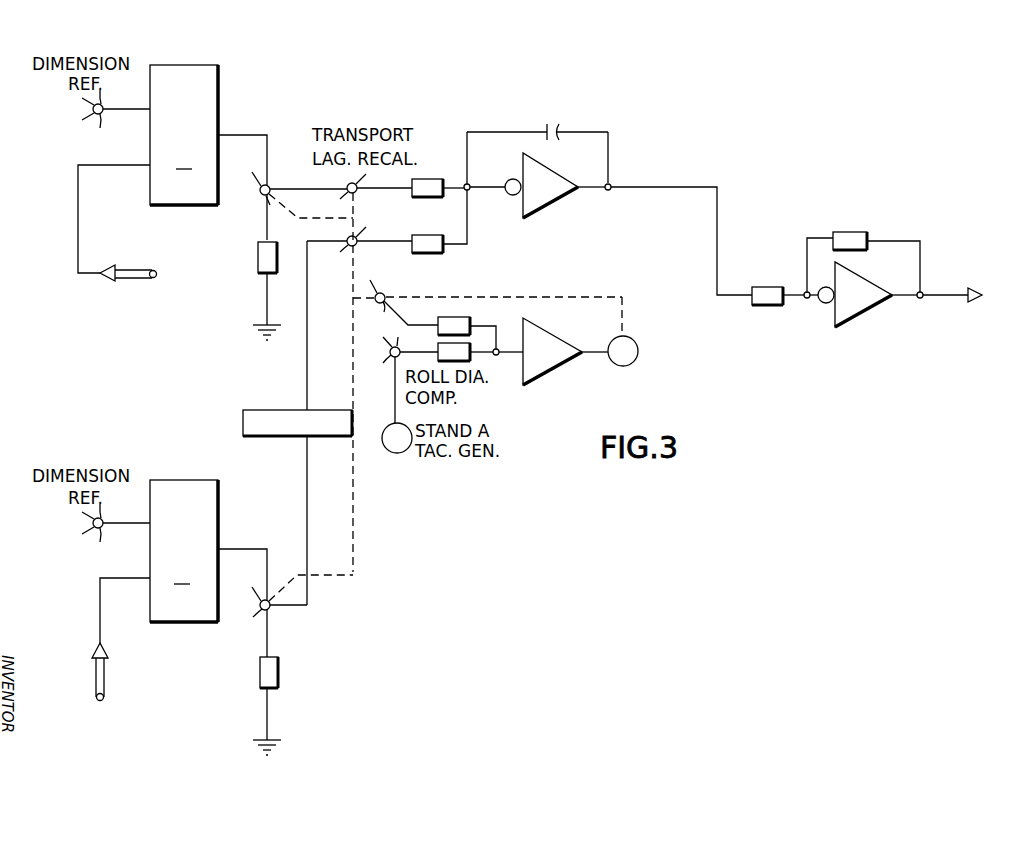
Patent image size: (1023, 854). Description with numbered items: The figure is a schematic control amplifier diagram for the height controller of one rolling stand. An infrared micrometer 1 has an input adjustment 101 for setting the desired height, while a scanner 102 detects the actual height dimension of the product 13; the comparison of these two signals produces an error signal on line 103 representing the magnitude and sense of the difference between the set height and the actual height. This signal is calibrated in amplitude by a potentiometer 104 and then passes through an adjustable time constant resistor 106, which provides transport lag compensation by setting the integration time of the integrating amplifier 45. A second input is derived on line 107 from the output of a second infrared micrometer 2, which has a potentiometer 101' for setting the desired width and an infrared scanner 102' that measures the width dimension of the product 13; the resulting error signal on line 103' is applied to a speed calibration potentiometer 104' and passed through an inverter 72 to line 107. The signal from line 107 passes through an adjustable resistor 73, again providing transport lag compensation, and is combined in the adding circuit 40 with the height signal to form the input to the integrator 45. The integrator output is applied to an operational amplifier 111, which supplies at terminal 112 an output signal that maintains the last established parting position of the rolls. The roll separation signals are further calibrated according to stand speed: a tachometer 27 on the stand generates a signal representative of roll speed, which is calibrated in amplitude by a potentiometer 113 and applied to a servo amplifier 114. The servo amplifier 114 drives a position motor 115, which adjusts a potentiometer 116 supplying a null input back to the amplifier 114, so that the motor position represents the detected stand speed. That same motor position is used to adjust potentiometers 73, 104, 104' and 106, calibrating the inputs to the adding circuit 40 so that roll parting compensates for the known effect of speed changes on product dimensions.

The infrared micrometer 1 is at (175, 194).
The infrared micrometer 2 is at (183, 614).
The product 13 is at (156, 278).
The tachometer 27 is at (397, 445).
The adding circuit 40 is at (437, 226).
The integrating amplifier 45 is at (534, 198).
The inverter 72 is at (243, 426).
The adjustable resistor 73 is at (340, 239).
The input adjustment 101 is at (97, 113).
The potentiometer 101' is at (95, 524).
The scanner 102 is at (114, 244).
The infrared scanner 102' is at (96, 626).
The line 103 is at (256, 143).
The line 103' is at (242, 558).
The potentiometer 104 is at (288, 193).
The speed calibration potentiometer 104' is at (288, 614).
The adjustable time constant resistor 106 is at (340, 185).
The line 107 is at (305, 388).
The operational amplifier 111 is at (848, 305).
The terminal 112 is at (970, 303).
The potentiometer 113 is at (399, 380).
The servo amplifier 114 is at (538, 363).
The position motor 115 is at (623, 358).
The potentiometer 116 is at (372, 278).